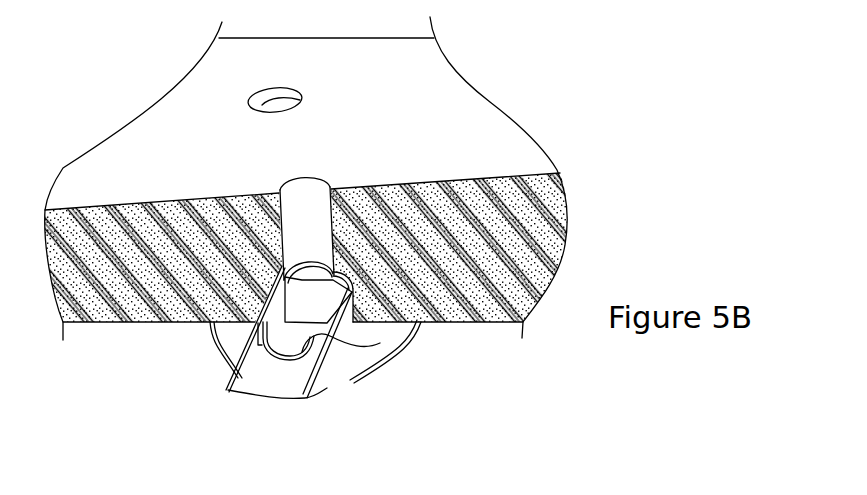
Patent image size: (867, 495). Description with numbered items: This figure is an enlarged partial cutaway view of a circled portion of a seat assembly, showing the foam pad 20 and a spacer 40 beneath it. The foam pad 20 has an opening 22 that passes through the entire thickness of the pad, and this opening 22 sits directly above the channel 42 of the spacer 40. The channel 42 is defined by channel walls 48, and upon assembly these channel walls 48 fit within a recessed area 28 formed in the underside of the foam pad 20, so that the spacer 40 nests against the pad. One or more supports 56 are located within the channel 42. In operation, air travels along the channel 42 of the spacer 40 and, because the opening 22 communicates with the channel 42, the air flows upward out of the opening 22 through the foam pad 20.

The foam pad 20 is at (153, 153).
The opening 22 is at (303, 203).
The recessed area 28 is at (380, 343).
The spacer 40 is at (222, 351).
The channel 42 is at (380, 360).
The channel walls 48 is at (323, 373).
The supports 56 is at (240, 390).